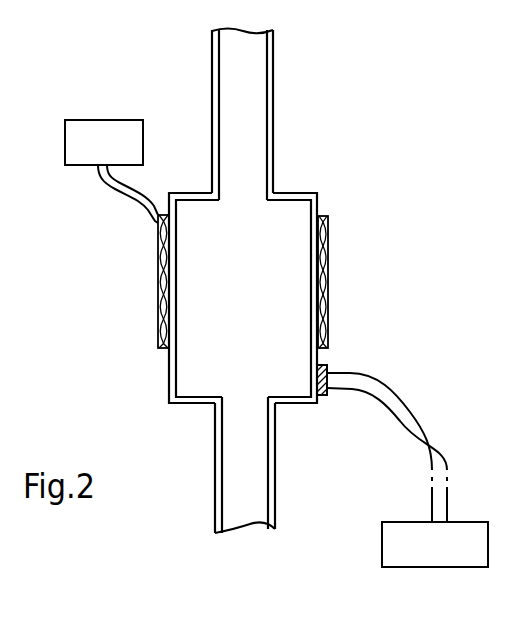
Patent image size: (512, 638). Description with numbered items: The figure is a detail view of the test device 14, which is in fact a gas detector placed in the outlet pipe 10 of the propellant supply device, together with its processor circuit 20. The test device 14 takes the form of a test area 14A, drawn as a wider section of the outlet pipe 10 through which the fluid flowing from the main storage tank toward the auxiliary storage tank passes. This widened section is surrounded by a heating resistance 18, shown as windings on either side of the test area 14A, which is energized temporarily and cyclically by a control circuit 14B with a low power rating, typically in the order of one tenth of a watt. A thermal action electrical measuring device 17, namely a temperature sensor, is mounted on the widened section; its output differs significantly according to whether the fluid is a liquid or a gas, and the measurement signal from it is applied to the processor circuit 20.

The outlet pipe 10 is at (274, 99).
The test device 14 is at (220, 278).
The test area 14A is at (318, 192).
The control circuit 14B is at (123, 159).
The thermal action electrical measuring device 17 is at (327, 368).
The heating resistance 18 is at (330, 281).
The processor circuit 20 is at (456, 560).